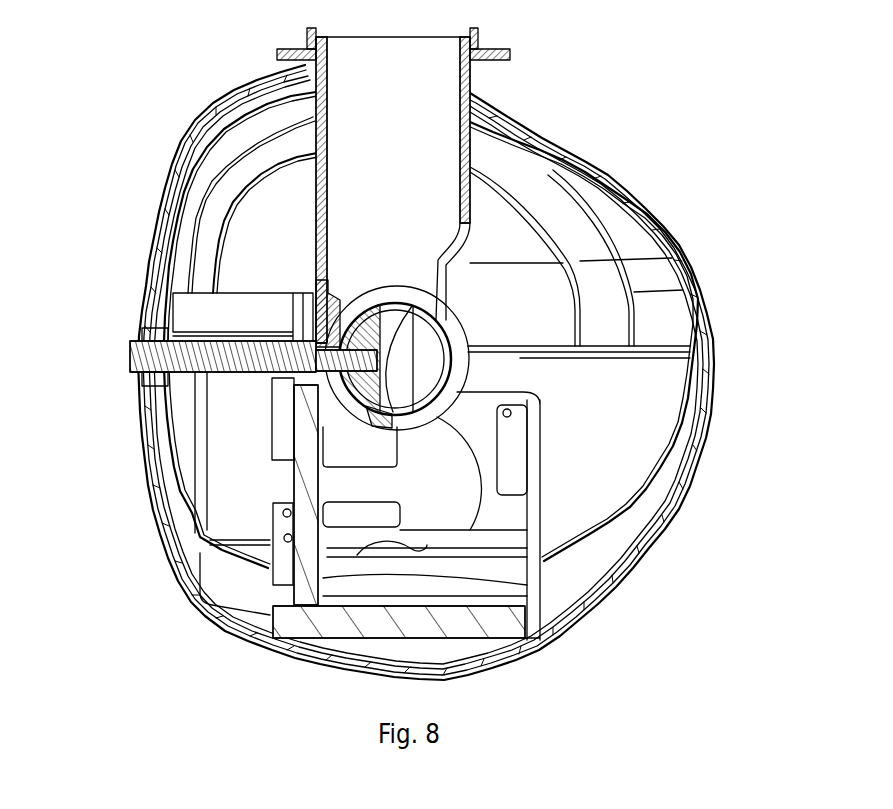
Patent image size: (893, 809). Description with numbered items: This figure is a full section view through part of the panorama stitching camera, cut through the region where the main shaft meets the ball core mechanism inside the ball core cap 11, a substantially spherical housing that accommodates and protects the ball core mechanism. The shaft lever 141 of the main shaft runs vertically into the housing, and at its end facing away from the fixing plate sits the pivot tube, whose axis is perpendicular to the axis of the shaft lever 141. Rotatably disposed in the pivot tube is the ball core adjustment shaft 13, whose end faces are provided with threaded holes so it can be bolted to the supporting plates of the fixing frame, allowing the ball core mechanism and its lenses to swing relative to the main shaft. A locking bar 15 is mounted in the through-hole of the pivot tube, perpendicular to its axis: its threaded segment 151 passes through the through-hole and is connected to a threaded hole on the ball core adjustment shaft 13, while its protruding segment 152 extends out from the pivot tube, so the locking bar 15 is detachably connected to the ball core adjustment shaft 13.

The ball core cap 11 is at (650, 530).
The ball core adjustment shaft 13 is at (390, 368).
The locking bar 15 is at (78, 212).
The shaft lever 141 is at (417, 164).
The threaded segment 151 is at (297, 300).
The protruding segment 152 is at (227, 341).